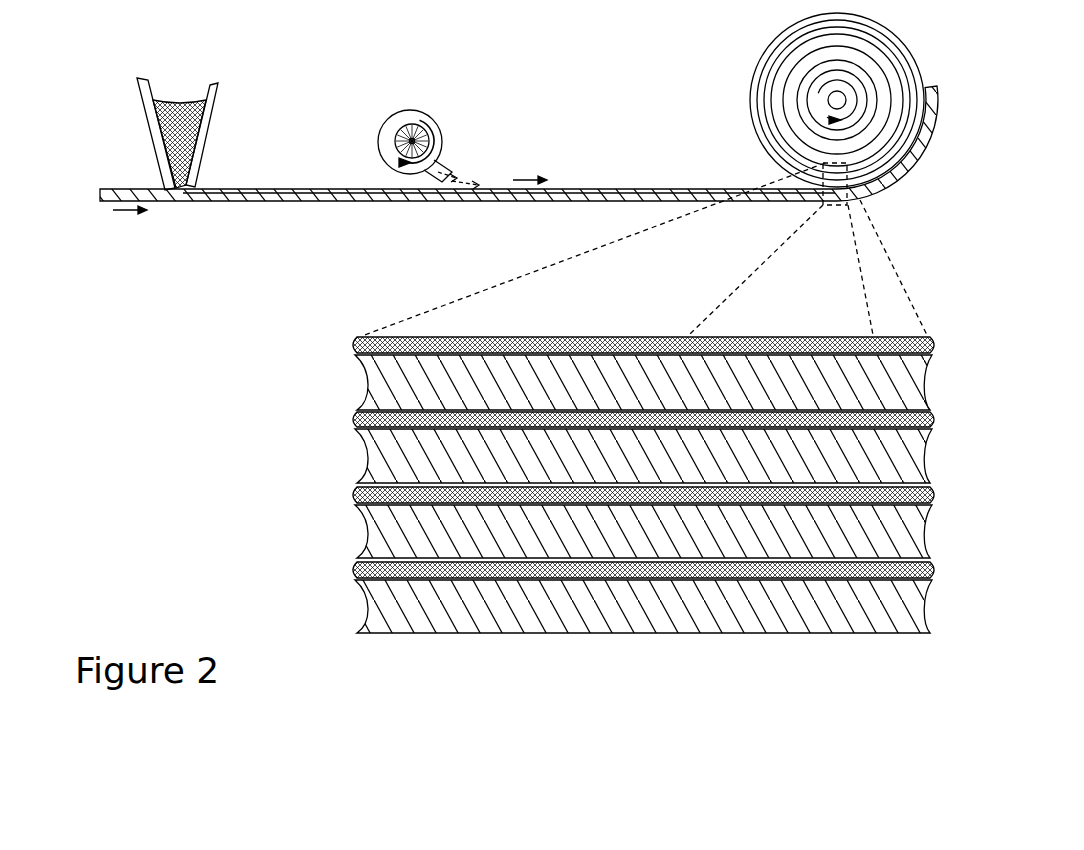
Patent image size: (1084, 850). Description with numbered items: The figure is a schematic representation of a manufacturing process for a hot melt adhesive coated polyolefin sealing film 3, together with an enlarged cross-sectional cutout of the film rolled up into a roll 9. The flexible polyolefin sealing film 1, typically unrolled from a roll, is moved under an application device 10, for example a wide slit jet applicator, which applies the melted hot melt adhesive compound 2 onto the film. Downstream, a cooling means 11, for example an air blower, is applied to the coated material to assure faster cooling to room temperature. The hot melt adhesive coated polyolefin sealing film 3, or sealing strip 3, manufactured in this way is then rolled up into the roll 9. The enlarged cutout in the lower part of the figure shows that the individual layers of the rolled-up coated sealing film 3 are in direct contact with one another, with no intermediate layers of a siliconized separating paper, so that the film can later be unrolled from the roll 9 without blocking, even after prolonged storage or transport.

The flexible polyolefin sealing film 1 is at (243, 197).
The hot melt adhesive compound 2 is at (252, 190).
The hot melt adhesive coated polyolefin sealing film 3 is at (698, 170).
The roll 9 is at (777, 82).
The application device 10 is at (155, 135).
The cooling means 11 is at (433, 128).